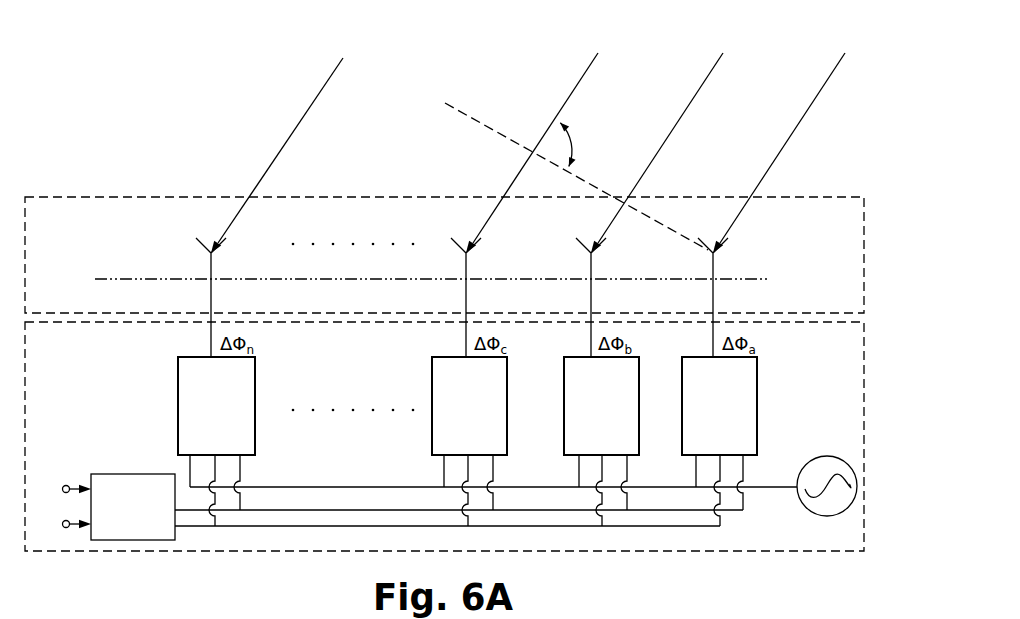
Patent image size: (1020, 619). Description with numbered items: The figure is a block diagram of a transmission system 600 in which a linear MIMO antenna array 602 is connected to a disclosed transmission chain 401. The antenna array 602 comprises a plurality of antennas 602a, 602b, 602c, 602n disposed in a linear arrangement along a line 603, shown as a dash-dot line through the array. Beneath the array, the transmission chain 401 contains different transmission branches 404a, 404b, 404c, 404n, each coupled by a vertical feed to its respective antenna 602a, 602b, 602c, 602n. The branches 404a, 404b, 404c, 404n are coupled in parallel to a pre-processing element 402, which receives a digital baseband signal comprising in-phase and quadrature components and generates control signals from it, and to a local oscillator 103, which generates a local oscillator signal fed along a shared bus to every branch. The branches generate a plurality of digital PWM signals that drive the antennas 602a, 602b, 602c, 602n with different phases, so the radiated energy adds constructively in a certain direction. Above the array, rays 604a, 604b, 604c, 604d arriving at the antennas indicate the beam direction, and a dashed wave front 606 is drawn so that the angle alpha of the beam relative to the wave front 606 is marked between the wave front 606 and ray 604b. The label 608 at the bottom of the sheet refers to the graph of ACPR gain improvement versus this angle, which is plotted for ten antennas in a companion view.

The transmission system 600 is at (92, 25).
The graph 608 is at (94, 617).
The linear MIMO antenna array 602 is at (68, 224).
The line 603 is at (92, 279).
The transmission branch 604a is at (319, 92).
The transmission branch 604b is at (574, 92).
The transmission branch 604c is at (697, 92).
The transmission branch 604d is at (819, 92).
The wave front 606 is at (471, 118).
The antenna 602n is at (190, 261).
The antenna 602c is at (441, 261).
The antenna 602b is at (569, 261).
The antenna 602a is at (692, 261).
The transmission chain 401 is at (73, 356).
The transmission branch 404n is at (192, 416).
The transmission branch 404c is at (446, 416).
The transmission branch 404b is at (578, 416).
The transmission branch 404a is at (696, 416).
The pre-processing element 402 is at (114, 518).
The local oscillator 103 is at (827, 456).